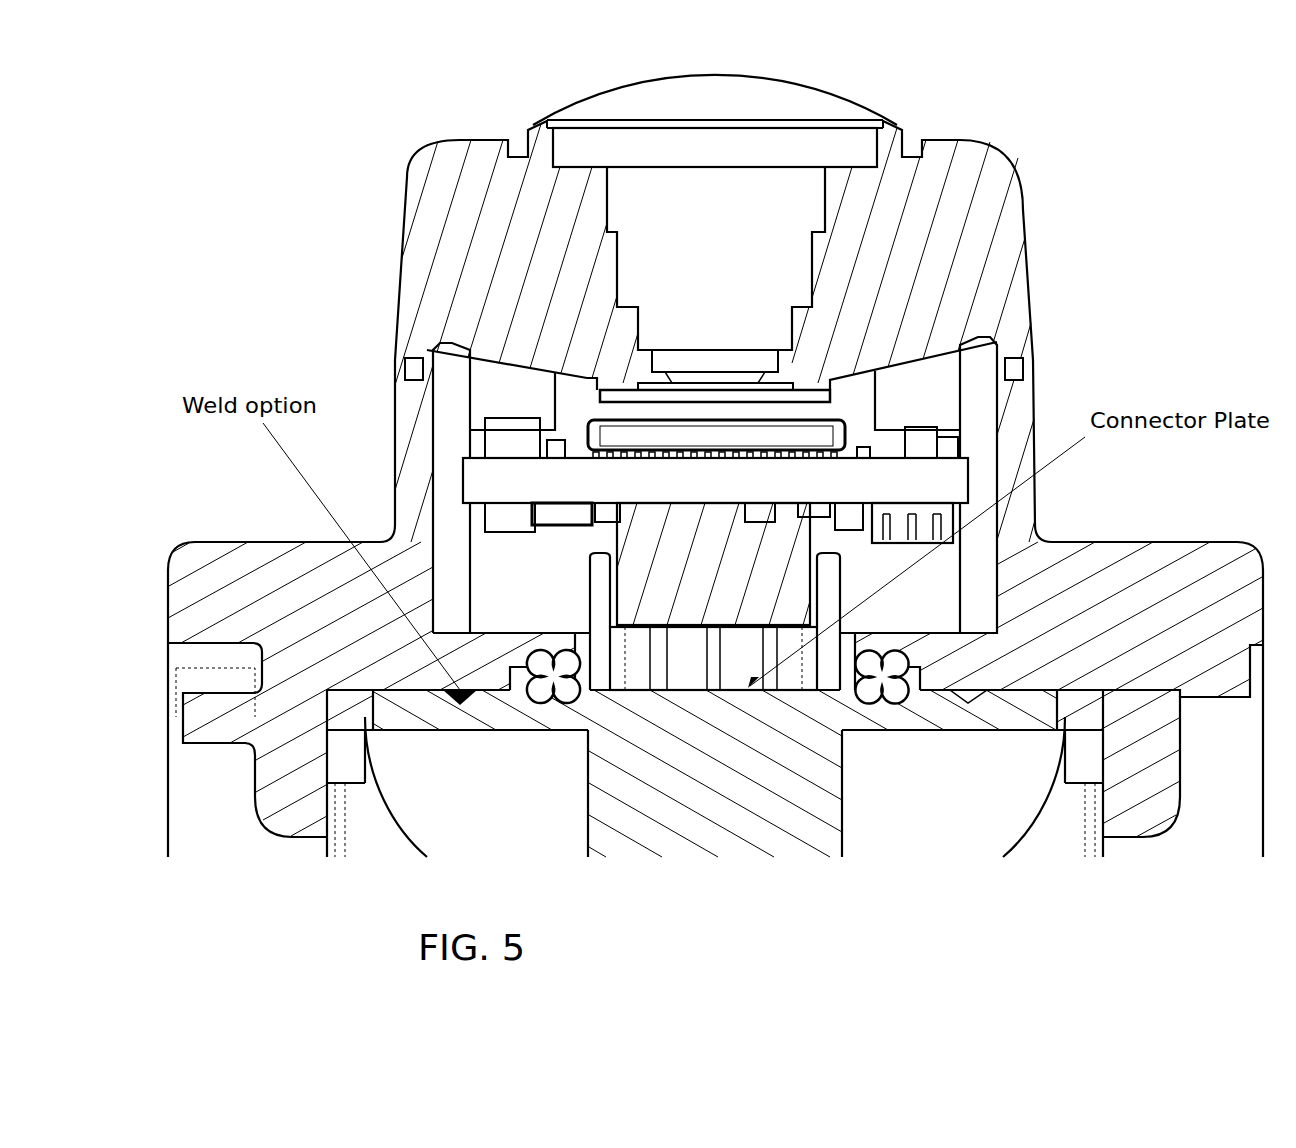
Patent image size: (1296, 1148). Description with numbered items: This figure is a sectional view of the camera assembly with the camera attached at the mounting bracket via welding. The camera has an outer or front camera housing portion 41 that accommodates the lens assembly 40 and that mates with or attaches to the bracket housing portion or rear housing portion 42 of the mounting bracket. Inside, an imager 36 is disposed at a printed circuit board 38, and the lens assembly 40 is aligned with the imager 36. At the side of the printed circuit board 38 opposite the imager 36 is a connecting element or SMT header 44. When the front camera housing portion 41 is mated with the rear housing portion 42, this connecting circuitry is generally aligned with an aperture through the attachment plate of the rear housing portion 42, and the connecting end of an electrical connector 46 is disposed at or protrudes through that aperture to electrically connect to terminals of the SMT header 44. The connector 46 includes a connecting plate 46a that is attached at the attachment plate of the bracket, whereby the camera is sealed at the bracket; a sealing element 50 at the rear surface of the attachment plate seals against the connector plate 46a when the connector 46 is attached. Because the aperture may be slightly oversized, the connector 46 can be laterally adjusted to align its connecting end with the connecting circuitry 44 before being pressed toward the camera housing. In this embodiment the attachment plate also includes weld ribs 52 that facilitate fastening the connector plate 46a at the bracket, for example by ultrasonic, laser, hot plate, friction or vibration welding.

The front camera housing portion 41 is at (455, 218).
The rear housing portion 42 is at (1025, 497).
The lens assembly 40 is at (897, 192).
The imager 36 is at (750, 420).
The printed circuit board 38 is at (638, 488).
The connector 44 is at (750, 548).
The connector 46 is at (795, 815).
The connecting plate 46a is at (1017, 713).
The sealing element 50 is at (550, 672).
The weld ribs 52 is at (967, 690).